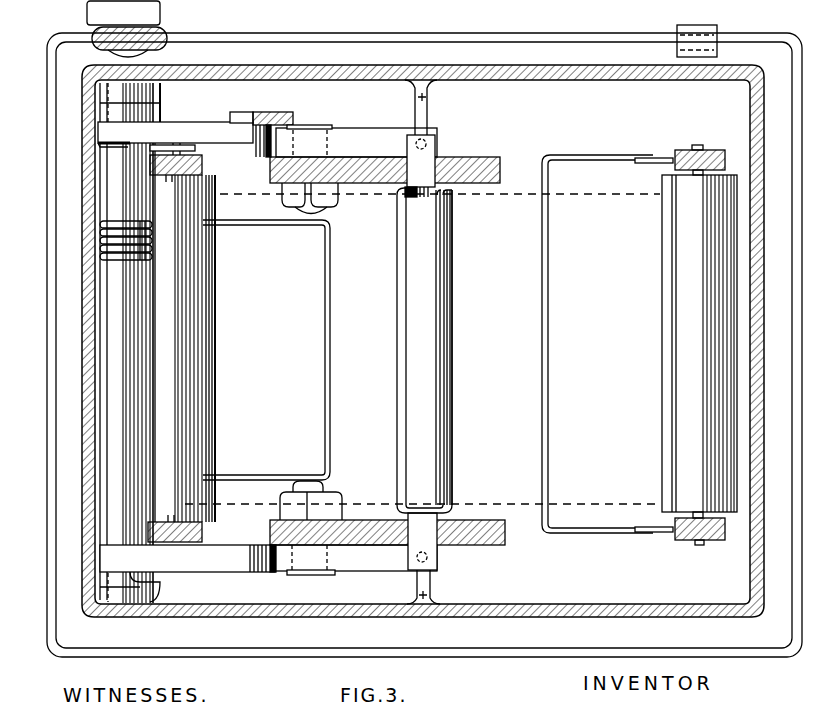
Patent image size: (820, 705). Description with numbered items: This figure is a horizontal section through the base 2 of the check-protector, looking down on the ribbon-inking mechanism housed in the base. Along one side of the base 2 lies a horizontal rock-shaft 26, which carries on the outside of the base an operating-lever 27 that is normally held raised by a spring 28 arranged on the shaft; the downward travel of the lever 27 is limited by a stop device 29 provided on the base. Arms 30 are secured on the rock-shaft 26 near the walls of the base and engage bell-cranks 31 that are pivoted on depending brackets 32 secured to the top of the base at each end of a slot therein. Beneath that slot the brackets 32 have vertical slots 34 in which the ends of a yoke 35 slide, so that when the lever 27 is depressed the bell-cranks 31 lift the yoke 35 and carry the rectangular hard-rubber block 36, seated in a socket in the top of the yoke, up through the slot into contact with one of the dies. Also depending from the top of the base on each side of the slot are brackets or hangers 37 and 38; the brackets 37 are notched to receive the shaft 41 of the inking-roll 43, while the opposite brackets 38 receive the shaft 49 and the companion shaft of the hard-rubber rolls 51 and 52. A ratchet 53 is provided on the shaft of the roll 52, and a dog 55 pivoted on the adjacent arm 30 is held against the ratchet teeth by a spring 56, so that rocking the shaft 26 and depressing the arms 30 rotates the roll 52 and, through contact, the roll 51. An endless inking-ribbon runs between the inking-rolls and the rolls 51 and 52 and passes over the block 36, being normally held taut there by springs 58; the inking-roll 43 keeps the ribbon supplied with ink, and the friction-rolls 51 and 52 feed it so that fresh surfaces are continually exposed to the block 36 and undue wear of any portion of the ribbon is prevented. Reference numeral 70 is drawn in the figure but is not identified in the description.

The base 2 is at (443, 52).
The rock-shaft 26 is at (123, 356).
The operating-lever 27 is at (167, 36).
The spring 28 is at (105, 261).
The stop device 29 is at (717, 33).
The arms 30 is at (190, 130).
The bell-cranks 31 is at (353, 142).
The depending brackets 32 is at (367, 176).
The vertical slots 34 is at (435, 152).
The yoke 35 is at (450, 433).
The rectangular block 36 is at (428, 395).
The brackets or hangers 37 is at (685, 148).
The brackets or hangers 38 is at (200, 168).
The shaft 41 is at (703, 147).
The inking-roll 43 is at (678, 290).
The shaft 49 is at (168, 178).
The hard-rubber roll 51 is at (170, 285).
The hard-rubber roll 52 is at (203, 318).
The ratchet 53 is at (195, 150).
The dog 55 is at (162, 141).
The spring 56 is at (116, 133).
The springs 58 is at (327, 383).
The block 70 is at (263, 115).